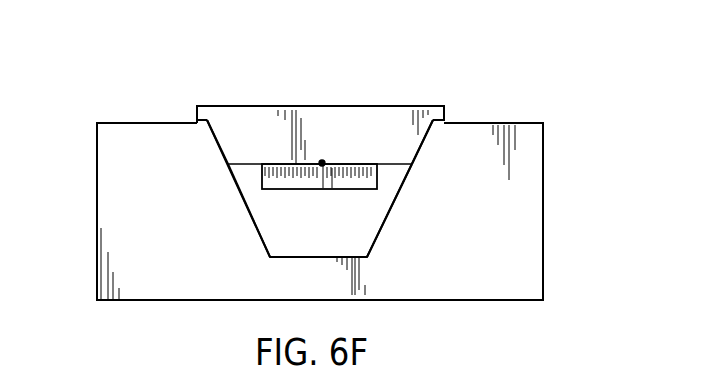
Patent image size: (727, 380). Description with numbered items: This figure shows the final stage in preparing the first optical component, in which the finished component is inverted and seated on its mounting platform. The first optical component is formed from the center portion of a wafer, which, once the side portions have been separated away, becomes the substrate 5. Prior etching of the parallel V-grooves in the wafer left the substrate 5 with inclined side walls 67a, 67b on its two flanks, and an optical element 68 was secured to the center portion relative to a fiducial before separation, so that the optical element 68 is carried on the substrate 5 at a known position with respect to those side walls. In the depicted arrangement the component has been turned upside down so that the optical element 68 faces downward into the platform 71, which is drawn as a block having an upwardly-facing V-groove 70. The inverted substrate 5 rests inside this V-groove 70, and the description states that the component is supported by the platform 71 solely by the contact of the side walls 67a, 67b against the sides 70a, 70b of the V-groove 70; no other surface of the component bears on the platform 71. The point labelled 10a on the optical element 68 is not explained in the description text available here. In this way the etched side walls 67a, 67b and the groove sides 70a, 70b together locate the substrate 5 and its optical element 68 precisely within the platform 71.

The substrate 5 is at (366, 113).
The light emitting region 10a is at (323, 161).
The side wall 67a is at (218, 143).
The side wall 67b is at (421, 147).
The optical element 68 is at (287, 190).
The V-groove 70 is at (266, 224).
The side of V-groove 70a is at (242, 187).
The side of V-groove 70b is at (395, 192).
The platform 71 is at (97, 193).